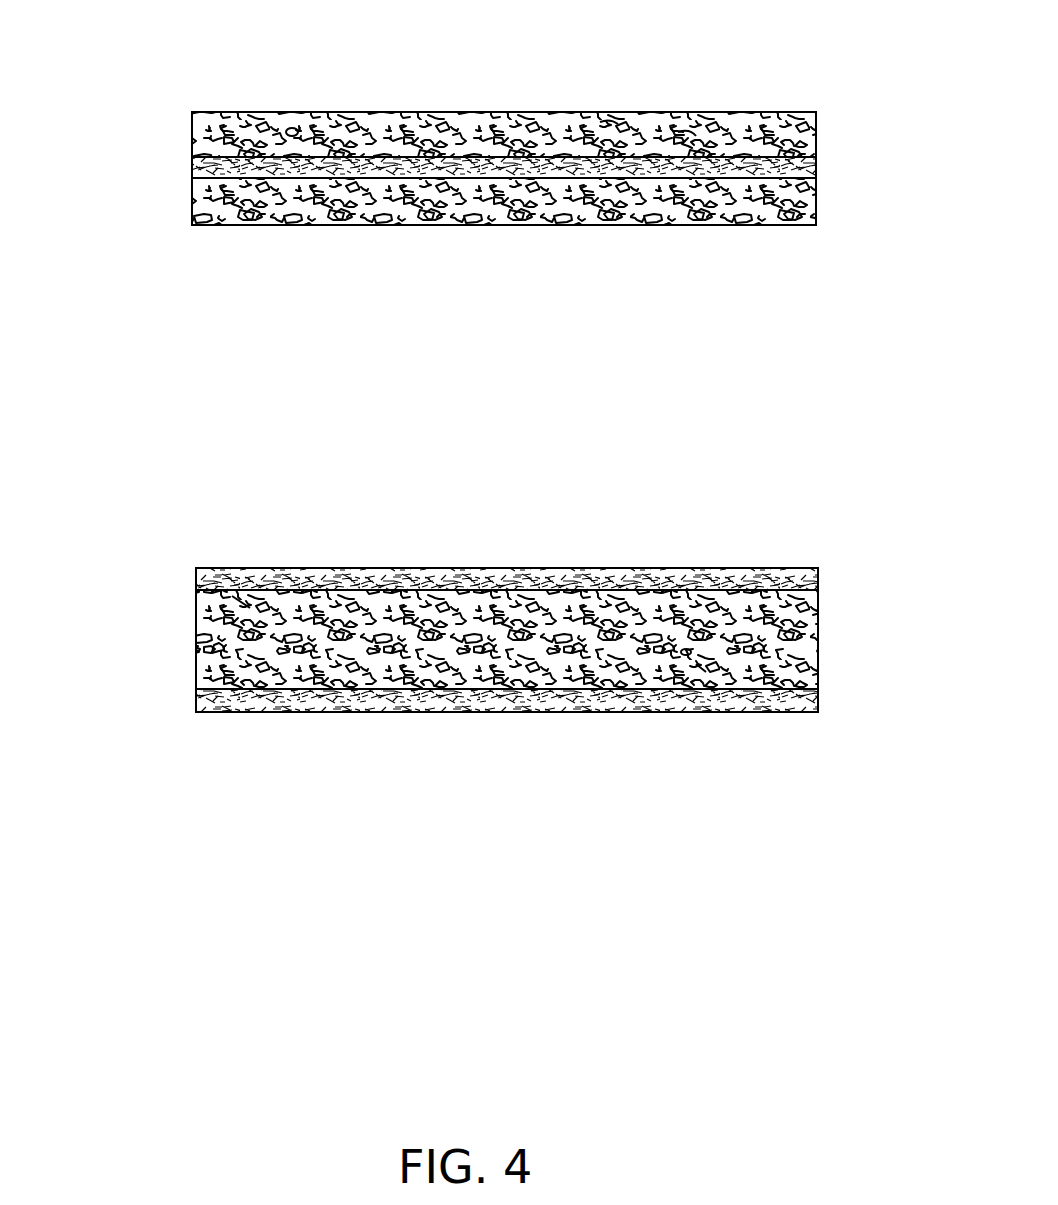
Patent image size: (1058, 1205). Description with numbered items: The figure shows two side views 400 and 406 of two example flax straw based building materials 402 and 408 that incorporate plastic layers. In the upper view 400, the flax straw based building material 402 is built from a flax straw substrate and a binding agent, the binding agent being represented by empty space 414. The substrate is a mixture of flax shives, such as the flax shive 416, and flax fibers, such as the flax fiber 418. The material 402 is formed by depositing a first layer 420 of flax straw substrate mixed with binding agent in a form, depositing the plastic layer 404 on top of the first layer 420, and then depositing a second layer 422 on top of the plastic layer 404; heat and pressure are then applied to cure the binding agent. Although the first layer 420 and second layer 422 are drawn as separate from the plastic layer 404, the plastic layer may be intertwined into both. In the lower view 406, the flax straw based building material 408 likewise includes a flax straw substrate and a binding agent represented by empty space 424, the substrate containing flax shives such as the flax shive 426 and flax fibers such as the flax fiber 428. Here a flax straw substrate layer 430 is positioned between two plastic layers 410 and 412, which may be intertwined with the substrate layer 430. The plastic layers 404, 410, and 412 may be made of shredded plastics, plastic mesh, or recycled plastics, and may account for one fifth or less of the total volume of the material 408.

The side view 400 is at (150, 122).
The flax straw based building material 402 is at (192, 188).
The plastic layer 404 is at (830, 168).
The empty space representing binding agent 414 is at (287, 128).
The flax shive 416 is at (605, 118).
The flax fiber 418 is at (682, 130).
The first layer 420 is at (830, 208).
The second layer 422 is at (830, 135).
The side view 406 is at (155, 610).
The flax straw based building material 408 is at (196, 677).
The plastic layer 410 is at (830, 700).
The plastic layer 412 is at (830, 572).
The empty space representing binding agent 424 is at (237, 593).
The flax shive 426 is at (685, 655).
The flax fiber 428 is at (700, 670).
The flax straw substrate layer 430 is at (830, 635).